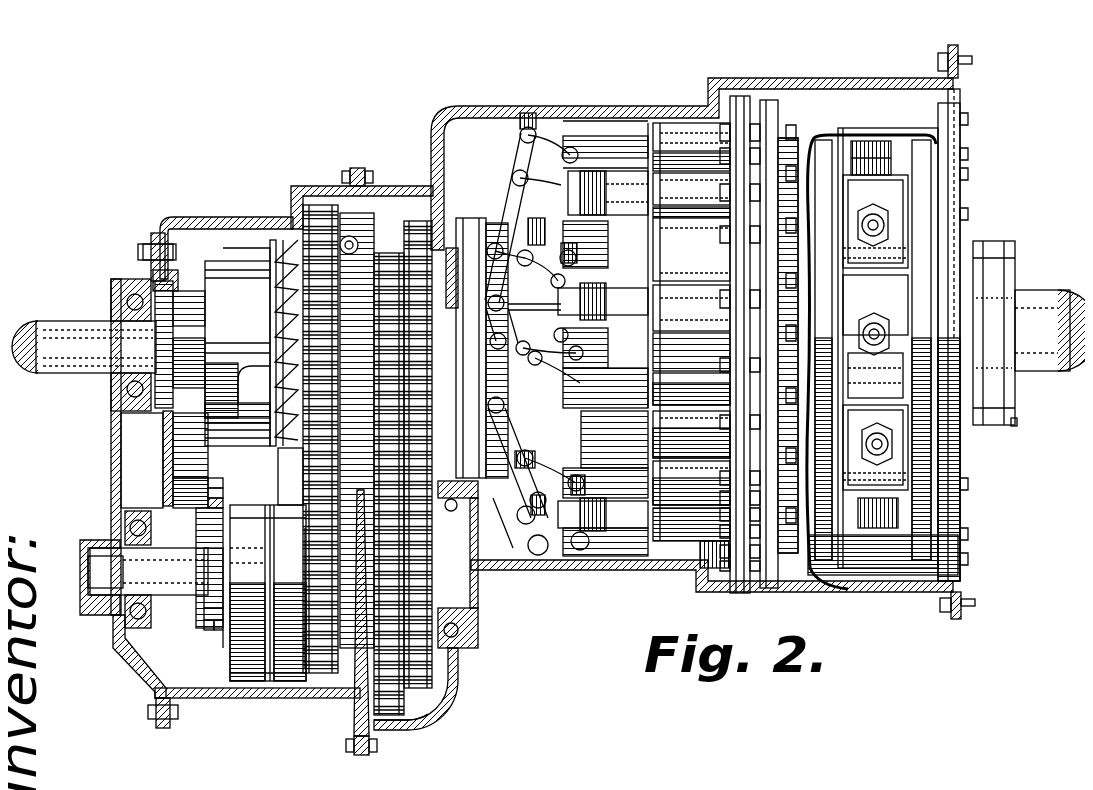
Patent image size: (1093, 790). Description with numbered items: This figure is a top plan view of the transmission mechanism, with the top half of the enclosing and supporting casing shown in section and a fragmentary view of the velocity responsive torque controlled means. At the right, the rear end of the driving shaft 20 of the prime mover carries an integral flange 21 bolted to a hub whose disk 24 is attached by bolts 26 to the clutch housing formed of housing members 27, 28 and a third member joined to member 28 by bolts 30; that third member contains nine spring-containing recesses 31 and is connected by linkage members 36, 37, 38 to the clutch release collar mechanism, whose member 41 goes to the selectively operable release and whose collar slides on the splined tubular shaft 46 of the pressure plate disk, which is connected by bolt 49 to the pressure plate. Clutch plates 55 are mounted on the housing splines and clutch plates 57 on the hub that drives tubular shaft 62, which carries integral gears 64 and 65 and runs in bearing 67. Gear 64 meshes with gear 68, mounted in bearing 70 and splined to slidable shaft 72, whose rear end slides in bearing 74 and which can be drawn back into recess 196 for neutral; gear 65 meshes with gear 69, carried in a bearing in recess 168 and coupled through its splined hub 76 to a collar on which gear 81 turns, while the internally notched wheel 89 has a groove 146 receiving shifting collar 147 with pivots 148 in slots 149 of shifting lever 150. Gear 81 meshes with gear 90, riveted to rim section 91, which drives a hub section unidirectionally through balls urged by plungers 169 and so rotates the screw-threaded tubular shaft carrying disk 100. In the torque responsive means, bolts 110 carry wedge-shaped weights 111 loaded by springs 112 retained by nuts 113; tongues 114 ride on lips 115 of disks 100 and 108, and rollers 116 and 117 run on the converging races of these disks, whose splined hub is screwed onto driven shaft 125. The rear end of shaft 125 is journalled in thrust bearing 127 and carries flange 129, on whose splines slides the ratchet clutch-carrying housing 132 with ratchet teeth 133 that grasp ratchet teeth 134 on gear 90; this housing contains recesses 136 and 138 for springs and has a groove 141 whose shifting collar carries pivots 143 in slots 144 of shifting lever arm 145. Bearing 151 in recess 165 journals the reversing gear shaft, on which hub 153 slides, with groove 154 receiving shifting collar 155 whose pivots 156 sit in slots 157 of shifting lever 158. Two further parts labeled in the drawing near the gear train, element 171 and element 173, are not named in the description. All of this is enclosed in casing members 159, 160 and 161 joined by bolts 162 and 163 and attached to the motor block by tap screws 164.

The driving shaft 20 is at (1040, 363).
The flange 21 is at (1004, 418).
The disk 24 is at (978, 289).
The bolts 26 is at (960, 166).
The housing member 27 is at (848, 566).
The housing member 28 is at (775, 114).
The bolts 30 is at (728, 86).
The spring-containing recesses 31 is at (655, 353).
The linkage member 36 is at (585, 146).
The linkage member 37 is at (500, 172).
The linkage member 38 is at (490, 197).
The clutch release mechanism member 41 is at (468, 226).
The splined tubular shaft 46 is at (520, 391).
The bolt 49 is at (600, 140).
The clutch plates 55 is at (590, 211).
The clutch plates 57 is at (585, 238).
The tubular shaft 62 is at (432, 321).
The gear 64 is at (425, 195).
The gear 65 is at (362, 252).
The bearing 67 is at (441, 271).
The gear 68 is at (452, 673).
The gear 69 is at (415, 722).
The bearing 70 is at (460, 622).
The slidable shaft 72 is at (140, 556).
The bearing 74 is at (120, 521).
The splined hub 76 is at (300, 572).
The gear 81 is at (290, 688).
The internally notched wheel 89 is at (268, 528).
The gear 90 is at (312, 200).
The rim section 91 is at (345, 224).
The disk 100 is at (822, 198).
The disk 108 is at (914, 221).
The bolts 110 is at (852, 136).
The wedge-shaped weights 111 is at (917, 199).
The springs 112 is at (882, 142).
The nuts 113 is at (864, 133).
The tongues 114 is at (890, 309).
The lips 115 is at (850, 309).
The rollers 116 is at (890, 200).
The rollers 117 is at (830, 226).
The driven shaft 125 is at (75, 348).
The thrust bearing 127 is at (105, 291).
The flange 129 is at (268, 303).
The ratchet clutch-carrying housing 132 is at (218, 258).
The ratchet teeth 133 is at (268, 212).
The ratchet teeth 134 is at (268, 263).
The recess 136 is at (238, 213).
The recess 138 is at (195, 303).
The groove 141 is at (175, 334).
The pivots 143 is at (165, 265).
The slots 144 is at (136, 245).
The shifting lever arm 145 is at (142, 268).
The groove 146 is at (196, 602).
The shifting collar 147 is at (196, 612).
The pivots 148 is at (214, 640).
The slots 149 is at (204, 630).
The shifting lever 150 is at (198, 622).
The bearing 151 is at (165, 426).
The hub 153 is at (300, 456).
The groove 154 is at (205, 432).
The shifting collar 155 is at (215, 481).
The pivots 156 is at (185, 485).
The slots 157 is at (215, 489).
The shifting lever 158 is at (215, 501).
The casing member 159 is at (495, 100).
The casing member 160 is at (288, 185).
The casing member 161 is at (105, 300).
The bolts 162 is at (360, 165).
The bolts 163 is at (146, 232).
The tap screws 164 is at (932, 52).
The recess 165 is at (165, 457).
The recess 168 is at (350, 686).
The plungers 169 is at (360, 226).
The gear 171 is at (358, 236).
The pinion shaft 173 is at (190, 542).
The recess 196 is at (98, 585).